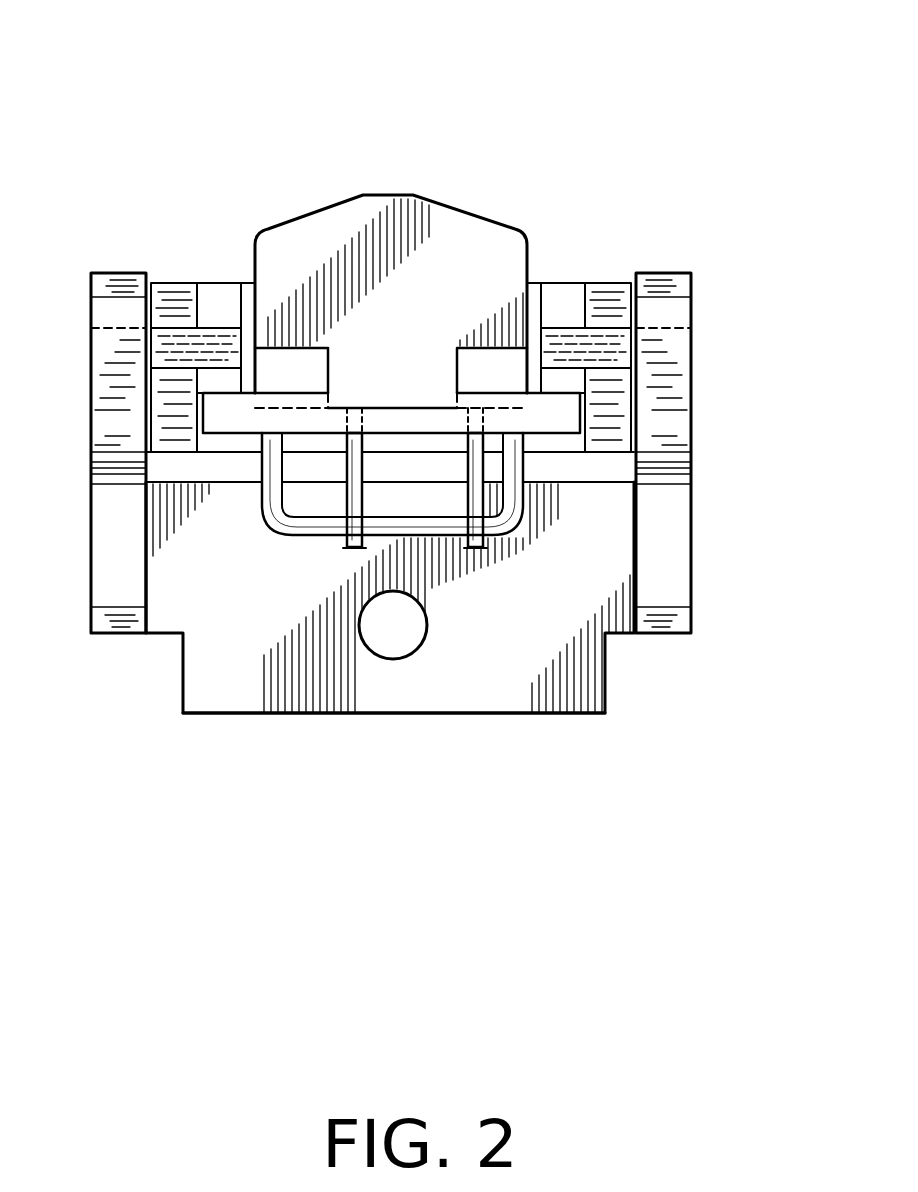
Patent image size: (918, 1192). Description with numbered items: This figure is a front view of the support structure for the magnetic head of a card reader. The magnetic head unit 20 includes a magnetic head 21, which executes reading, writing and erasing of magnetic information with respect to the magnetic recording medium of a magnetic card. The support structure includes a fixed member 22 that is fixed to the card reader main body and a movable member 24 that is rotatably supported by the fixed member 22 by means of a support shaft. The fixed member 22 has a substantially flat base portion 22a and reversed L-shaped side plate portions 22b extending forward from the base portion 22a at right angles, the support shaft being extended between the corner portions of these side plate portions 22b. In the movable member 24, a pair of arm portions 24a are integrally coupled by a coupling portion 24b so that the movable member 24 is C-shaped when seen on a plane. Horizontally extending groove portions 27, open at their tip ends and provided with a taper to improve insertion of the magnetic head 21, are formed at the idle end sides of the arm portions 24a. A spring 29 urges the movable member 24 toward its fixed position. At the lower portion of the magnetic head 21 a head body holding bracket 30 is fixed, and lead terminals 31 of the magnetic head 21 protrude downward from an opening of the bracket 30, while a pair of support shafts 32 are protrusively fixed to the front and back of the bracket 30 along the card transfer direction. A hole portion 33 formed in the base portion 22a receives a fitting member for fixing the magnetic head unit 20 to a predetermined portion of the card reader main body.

The magnetic head unit 20 is at (89, 128).
The magnetic head 21 is at (332, 233).
The fixed member 22 is at (706, 584).
The base portion 22a is at (473, 692).
The side plate portion 22b is at (114, 272).
The movable member 24 is at (612, 270).
The arm portion 24a is at (168, 414).
The coupling portion 24b is at (548, 302).
The groove portion 27 is at (168, 332).
The spring 29 is at (283, 542).
The head body holding bracket 30 is at (393, 425).
The lead terminals 31 is at (350, 555).
The support shaft 32 is at (212, 338).
The hole portion 33 is at (362, 617).